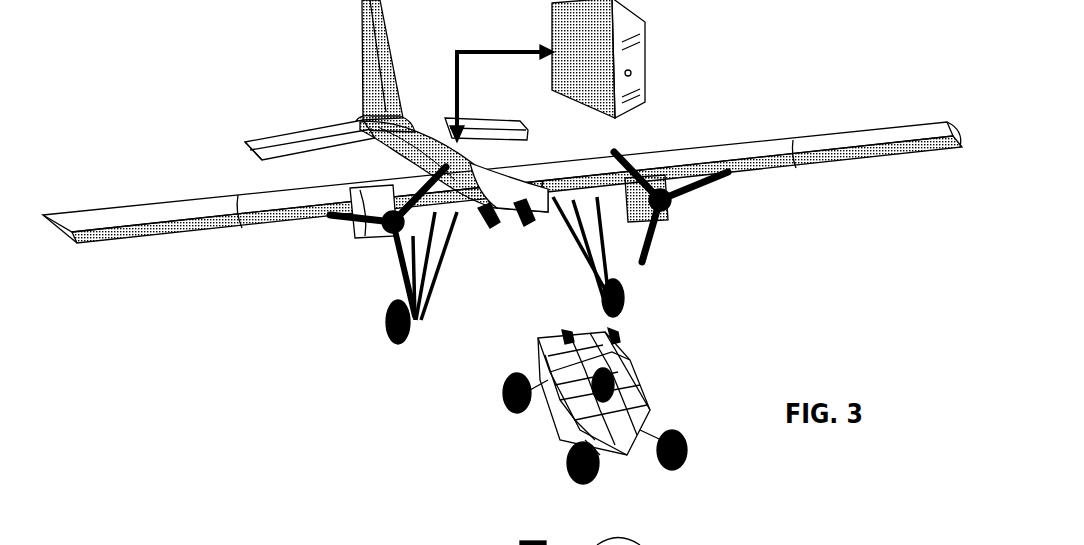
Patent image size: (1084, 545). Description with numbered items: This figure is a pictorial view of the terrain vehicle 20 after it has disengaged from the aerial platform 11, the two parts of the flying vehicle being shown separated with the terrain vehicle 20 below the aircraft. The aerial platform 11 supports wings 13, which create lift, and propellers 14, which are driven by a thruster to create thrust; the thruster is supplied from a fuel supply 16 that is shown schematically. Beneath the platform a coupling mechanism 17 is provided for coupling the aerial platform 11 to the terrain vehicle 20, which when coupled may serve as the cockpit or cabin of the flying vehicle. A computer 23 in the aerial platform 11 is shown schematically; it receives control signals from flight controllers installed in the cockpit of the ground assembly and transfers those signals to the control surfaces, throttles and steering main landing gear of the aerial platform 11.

The aerial platform 11 is at (502, 172).
The wings 13 is at (755, 168).
The propellers 14 is at (660, 238).
The fuel supply 16 is at (383, 165).
The coupling mechanism 17 is at (494, 232).
The terrain vehicle 20 is at (704, 445).
The computer 23 is at (647, 50).